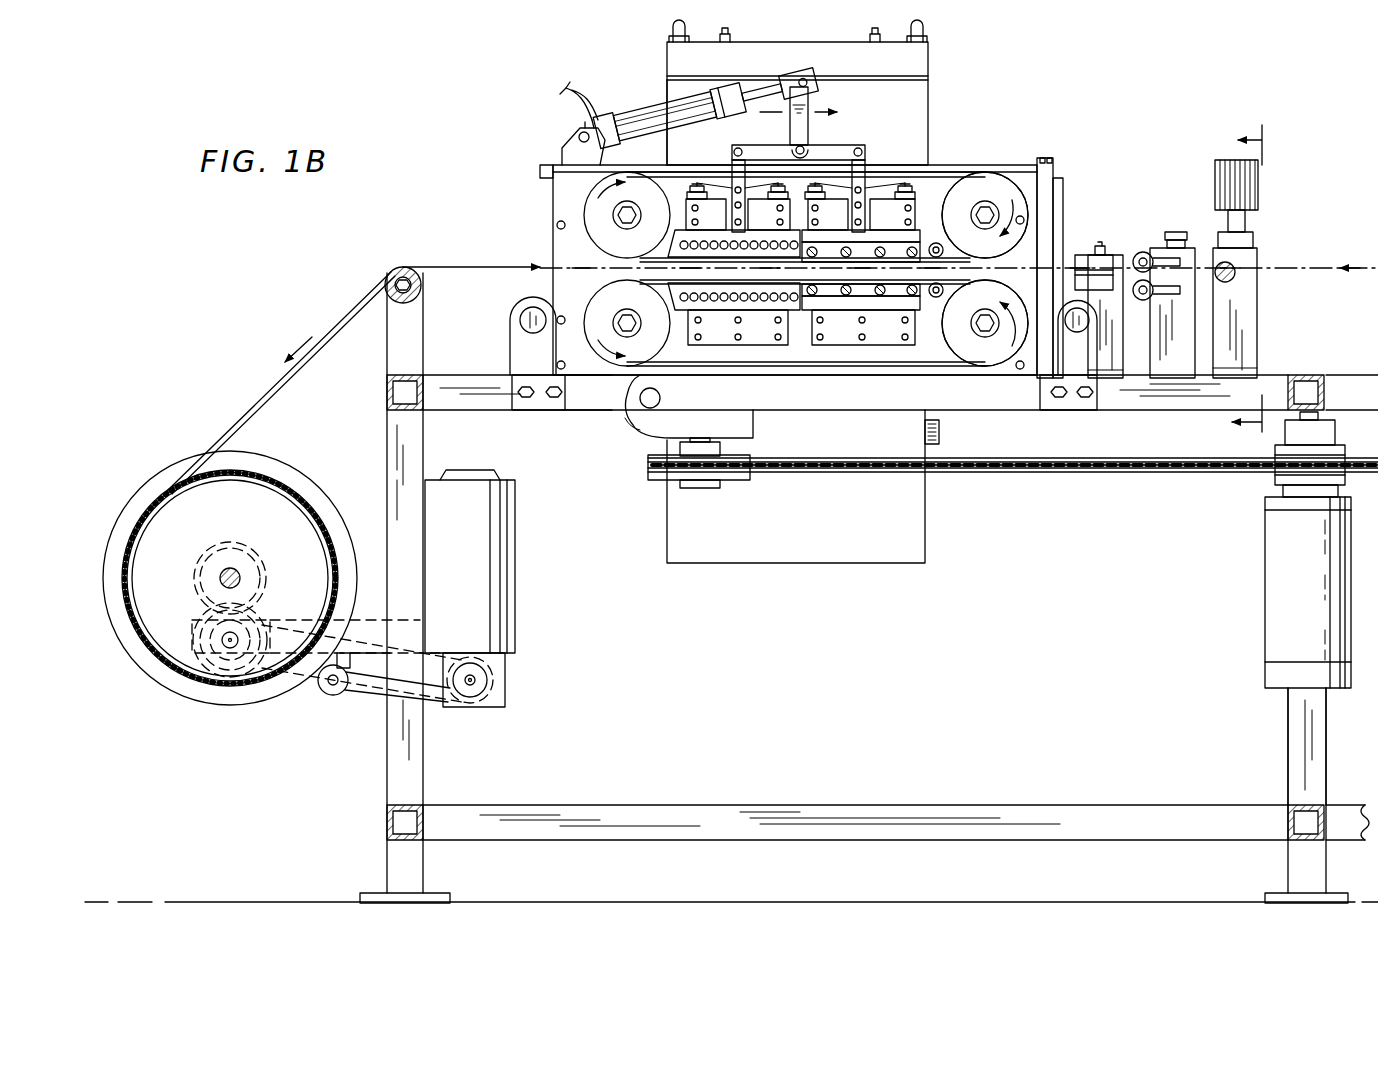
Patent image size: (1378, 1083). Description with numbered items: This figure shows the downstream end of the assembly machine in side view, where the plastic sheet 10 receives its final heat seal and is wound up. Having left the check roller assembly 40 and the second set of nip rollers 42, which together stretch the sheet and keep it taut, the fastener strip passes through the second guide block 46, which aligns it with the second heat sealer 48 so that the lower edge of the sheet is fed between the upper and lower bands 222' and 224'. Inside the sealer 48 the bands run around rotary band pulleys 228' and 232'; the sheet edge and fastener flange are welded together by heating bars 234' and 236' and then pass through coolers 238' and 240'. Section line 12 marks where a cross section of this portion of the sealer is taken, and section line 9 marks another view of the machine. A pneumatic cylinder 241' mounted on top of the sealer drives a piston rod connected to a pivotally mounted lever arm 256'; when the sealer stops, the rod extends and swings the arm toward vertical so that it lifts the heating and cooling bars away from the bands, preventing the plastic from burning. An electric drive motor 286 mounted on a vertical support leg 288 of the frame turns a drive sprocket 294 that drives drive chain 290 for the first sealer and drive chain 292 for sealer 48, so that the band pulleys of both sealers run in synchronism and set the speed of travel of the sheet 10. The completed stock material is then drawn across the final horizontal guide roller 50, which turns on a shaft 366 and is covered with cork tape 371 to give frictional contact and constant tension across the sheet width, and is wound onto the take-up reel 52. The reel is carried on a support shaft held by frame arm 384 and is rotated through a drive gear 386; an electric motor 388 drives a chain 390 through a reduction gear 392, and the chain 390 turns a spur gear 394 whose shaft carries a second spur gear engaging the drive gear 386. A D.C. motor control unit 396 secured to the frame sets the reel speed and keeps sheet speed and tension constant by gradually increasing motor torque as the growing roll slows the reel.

The section line 9- 9 is at (1254, 281).
The plastic sheet 10 is at (345, 322).
The section line 12— 12 is at (945, 192).
The check roller assembly 40 is at (1260, 258).
The second set of nip rollers 42 is at (1183, 235).
The second guide block 46 is at (1108, 250).
The second Doboy machine 48 is at (948, 160).
The final guide roller 50 is at (398, 268).
The take-up reel 52 is at (303, 480).
The upper band 222' is at (770, 186).
The lower band 224' is at (855, 334).
The rotary band pulley 228' is at (987, 196).
The rotary band pulley 232' is at (985, 341).
The heating bar 234' is at (857, 239).
The heating bar 236' is at (861, 277).
The cooler 238' is at (734, 239).
The cooler 240' is at (734, 323).
The pneumatic cylinder 241' is at (689, 114).
The lever arm 256' is at (810, 122).
The electric drive motor 286 is at (1308, 592).
The vertical support leg 288 is at (1300, 740).
The drive chain 290 is at (1320, 466).
The drive chain 292 is at (1112, 470).
The drive sprocket 294 is at (1275, 487).
The shaft 366 is at (418, 298).
The cork tape 371 is at (421, 283).
The frame arm 384 is at (365, 630).
The drive gear 386 is at (262, 572).
The electric motor 388 is at (470, 561).
The chain 390 is at (355, 676).
The reduction gear 392 is at (505, 683).
The spur gear 394 is at (226, 660).
The D.C. motor control unit 396 is at (782, 469).